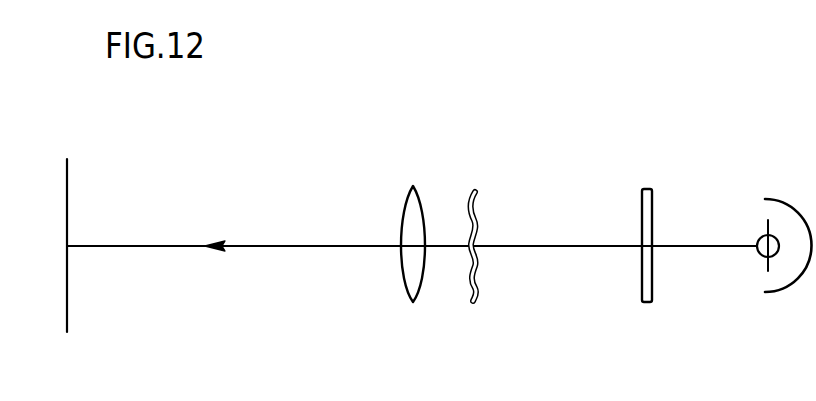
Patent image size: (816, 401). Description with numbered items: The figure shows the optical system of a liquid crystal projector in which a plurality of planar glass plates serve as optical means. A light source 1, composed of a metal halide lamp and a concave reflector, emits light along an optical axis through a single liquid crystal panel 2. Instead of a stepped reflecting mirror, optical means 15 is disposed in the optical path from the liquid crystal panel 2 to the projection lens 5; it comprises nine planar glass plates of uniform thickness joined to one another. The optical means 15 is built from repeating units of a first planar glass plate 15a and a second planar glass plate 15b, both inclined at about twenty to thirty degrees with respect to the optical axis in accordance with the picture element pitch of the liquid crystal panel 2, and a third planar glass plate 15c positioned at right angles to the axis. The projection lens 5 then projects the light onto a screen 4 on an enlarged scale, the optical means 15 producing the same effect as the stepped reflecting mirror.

The light source 1 is at (771, 292).
The liquid crystal panel 2 is at (645, 303).
The screen 4 is at (67, 315).
The projection lens 5 is at (413, 303).
The optical means 15 is at (478, 305).
The first planar glass plate 15a is at (477, 191).
The second planar glass plate 15b is at (478, 226).
The third planar glass plate 15c is at (481, 211).